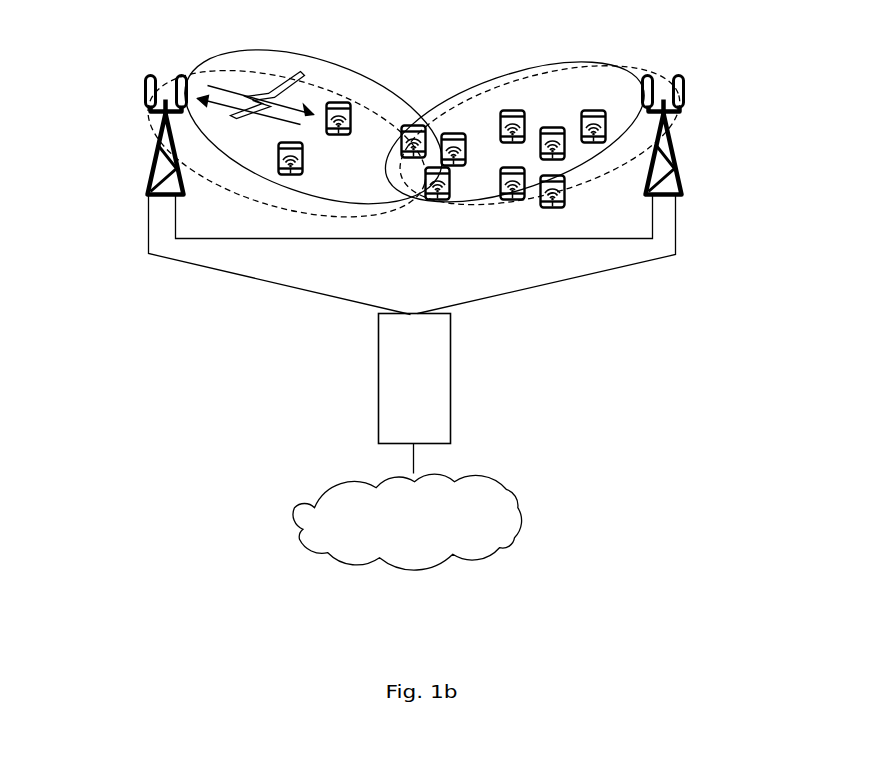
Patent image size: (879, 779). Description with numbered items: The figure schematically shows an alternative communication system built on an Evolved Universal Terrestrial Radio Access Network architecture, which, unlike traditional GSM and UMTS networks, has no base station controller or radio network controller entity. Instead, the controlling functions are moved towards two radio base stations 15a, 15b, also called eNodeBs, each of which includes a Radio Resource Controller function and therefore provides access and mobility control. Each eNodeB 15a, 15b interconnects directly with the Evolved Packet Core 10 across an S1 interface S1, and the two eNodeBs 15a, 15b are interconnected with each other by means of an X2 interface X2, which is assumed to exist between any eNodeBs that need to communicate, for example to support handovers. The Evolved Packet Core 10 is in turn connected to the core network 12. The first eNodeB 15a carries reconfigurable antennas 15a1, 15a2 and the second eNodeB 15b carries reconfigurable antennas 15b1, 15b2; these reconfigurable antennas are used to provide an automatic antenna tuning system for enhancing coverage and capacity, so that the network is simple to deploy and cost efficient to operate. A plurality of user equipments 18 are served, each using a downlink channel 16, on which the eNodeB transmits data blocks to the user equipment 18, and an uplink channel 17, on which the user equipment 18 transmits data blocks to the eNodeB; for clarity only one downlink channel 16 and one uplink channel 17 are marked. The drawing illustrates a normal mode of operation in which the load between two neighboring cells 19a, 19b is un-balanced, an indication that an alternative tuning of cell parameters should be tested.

The Evolved Packet Core 10 is at (418, 350).
The core network 12 is at (492, 490).
The radio base station 15a is at (110, 113).
The reconfigurable antenna 15a1 is at (147, 83).
The reconfigurable antenna 15a2 is at (175, 77).
The radio base station 15b is at (716, 110).
The reconfigurable antenna 15b1 is at (650, 82).
The reconfigurable antenna 15b2 is at (685, 92).
The downlink channel 16 is at (249, 93).
The uplink channel 17 is at (227, 100).
The user equipment 18 is at (412, 126).
The cell 19a is at (300, 87).
The cell 19b is at (530, 82).
The X2 interface X2 is at (413, 223).
The S1 interface S1 is at (258, 263).